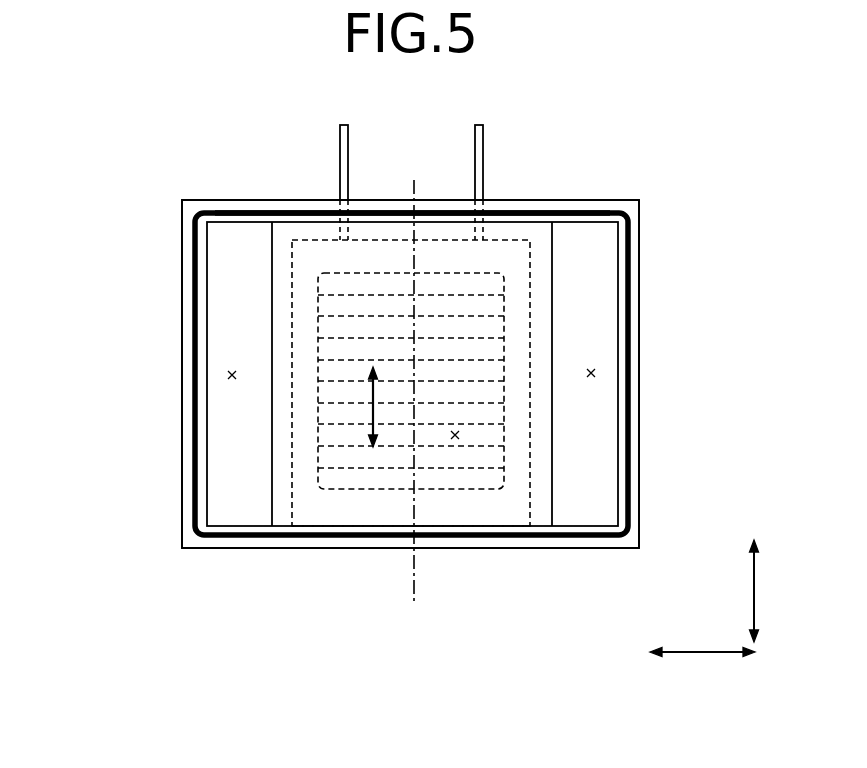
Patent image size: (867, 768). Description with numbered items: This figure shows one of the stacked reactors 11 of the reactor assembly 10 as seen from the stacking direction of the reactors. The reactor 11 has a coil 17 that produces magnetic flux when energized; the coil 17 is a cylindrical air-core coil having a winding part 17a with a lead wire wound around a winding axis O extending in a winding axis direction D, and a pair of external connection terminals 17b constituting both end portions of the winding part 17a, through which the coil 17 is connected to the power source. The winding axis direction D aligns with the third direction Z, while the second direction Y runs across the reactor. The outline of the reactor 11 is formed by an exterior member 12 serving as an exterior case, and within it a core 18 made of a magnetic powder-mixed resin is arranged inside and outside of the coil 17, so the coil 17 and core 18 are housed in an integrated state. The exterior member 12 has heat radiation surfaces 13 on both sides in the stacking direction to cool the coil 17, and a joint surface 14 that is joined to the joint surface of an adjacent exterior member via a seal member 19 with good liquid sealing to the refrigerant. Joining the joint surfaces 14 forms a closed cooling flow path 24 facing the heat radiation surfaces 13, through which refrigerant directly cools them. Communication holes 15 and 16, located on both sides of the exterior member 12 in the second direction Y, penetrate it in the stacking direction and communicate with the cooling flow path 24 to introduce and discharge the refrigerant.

The power storage device 10 is at (662, 146).
The reactor 11 is at (556, 187).
The exterior member 12 is at (653, 255).
The heat radiation surface 13 is at (300, 298).
The joint surface 14 is at (632, 310).
The communication hole 15 is at (591, 373).
The communication hole 16 is at (232, 375).
The coil 17 is at (360, 491).
The winding part 17a is at (485, 415).
The external connection terminal 17b is at (479, 170).
The core 18 is at (455, 507).
The seal member 19 is at (262, 198).
The cooling flow path 24 is at (455, 435).
The winding axis direction D is at (373, 411).
The winding axis O is at (414, 576).
The third direction Z is at (765, 591).
The second direction Y is at (702, 669).